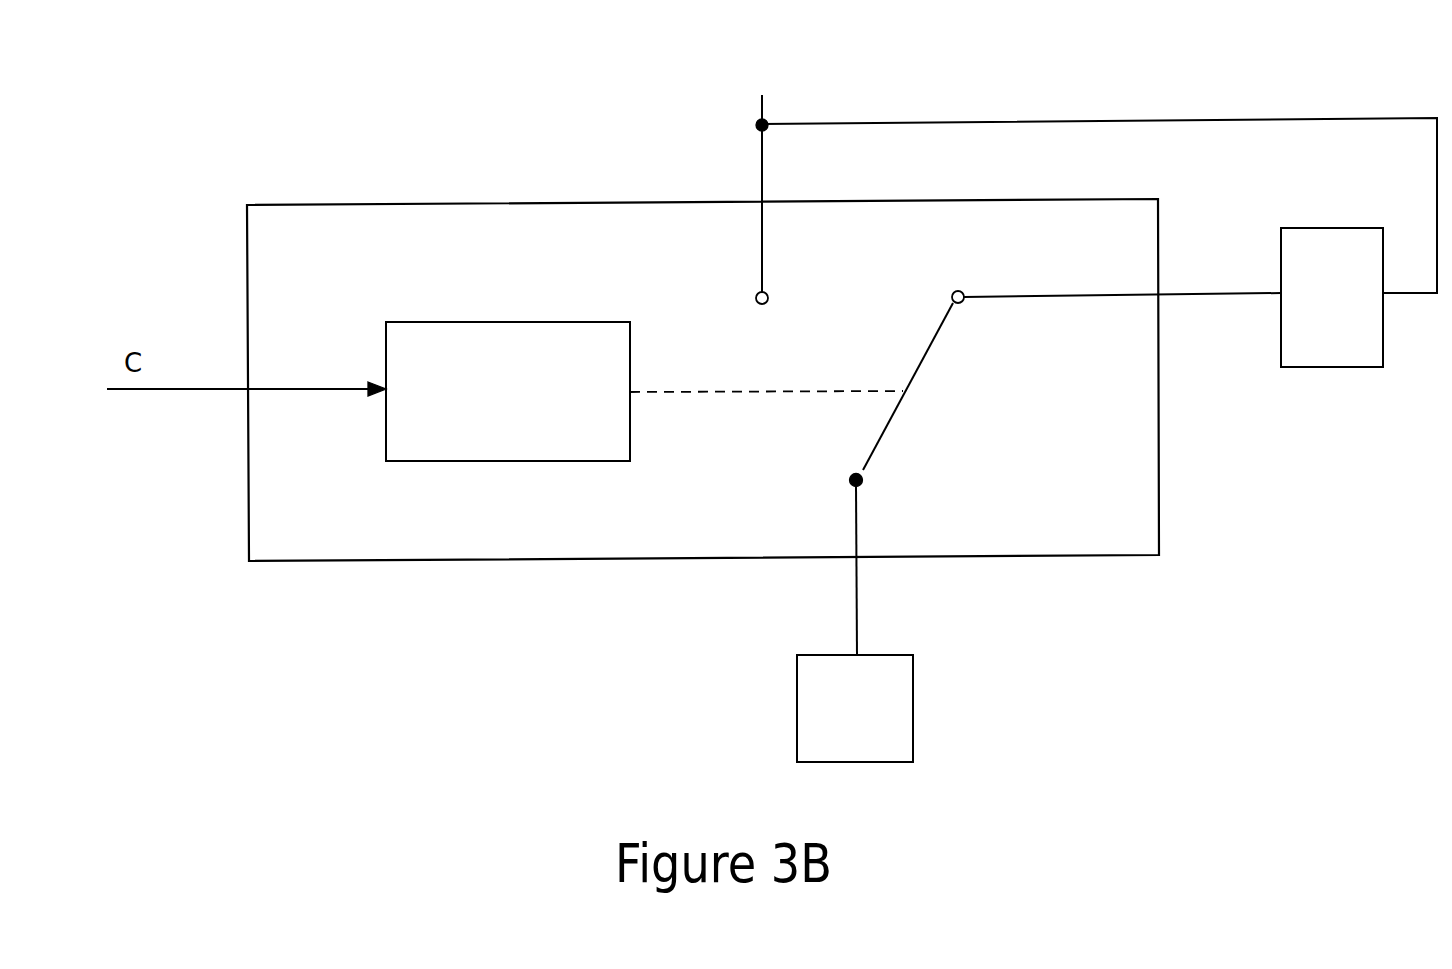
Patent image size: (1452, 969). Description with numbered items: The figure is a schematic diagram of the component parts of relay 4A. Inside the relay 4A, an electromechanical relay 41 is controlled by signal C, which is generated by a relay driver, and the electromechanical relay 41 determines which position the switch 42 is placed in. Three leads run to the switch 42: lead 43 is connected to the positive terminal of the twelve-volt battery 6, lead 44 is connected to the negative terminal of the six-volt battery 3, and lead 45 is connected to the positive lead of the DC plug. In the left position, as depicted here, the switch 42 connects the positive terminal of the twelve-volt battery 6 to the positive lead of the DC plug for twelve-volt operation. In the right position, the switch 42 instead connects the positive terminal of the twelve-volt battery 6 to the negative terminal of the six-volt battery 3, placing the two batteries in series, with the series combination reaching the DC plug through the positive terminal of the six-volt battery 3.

The relay 4A is at (360, 200).
The electromechanical relay 41 is at (487, 321).
The switch 42 is at (913, 375).
The lead 43 is at (857, 605).
The lead 44 is at (1205, 295).
The lead 45 is at (762, 180).
The 6V battery 3 is at (1332, 367).
The 12V battery 6 is at (913, 709).